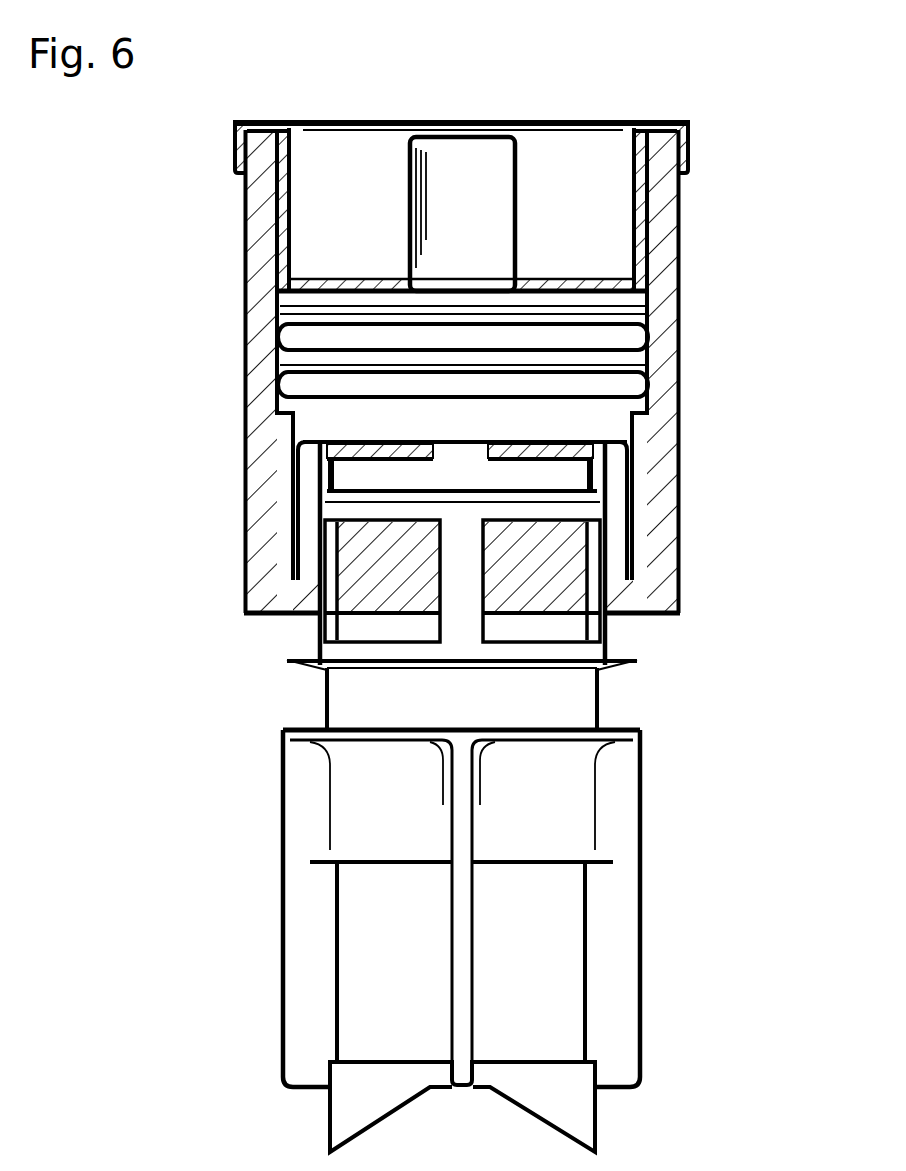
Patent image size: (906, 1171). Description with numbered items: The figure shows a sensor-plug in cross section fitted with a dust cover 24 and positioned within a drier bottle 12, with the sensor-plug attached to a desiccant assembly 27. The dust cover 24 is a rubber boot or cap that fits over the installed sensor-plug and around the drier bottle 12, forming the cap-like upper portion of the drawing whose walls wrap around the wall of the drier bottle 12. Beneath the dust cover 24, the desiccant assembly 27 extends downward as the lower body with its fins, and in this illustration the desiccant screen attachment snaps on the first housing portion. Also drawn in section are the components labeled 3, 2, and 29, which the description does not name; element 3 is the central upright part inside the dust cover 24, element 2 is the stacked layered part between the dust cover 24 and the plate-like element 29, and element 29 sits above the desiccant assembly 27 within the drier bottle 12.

The dust cover 24 is at (652, 123).
The plunger 3 is at (467, 226).
The bellows spring 2 is at (567, 298).
The drier bottle 12 is at (654, 413).
The sealing disc 29 is at (510, 472).
The desiccant assembly 27 is at (582, 692).